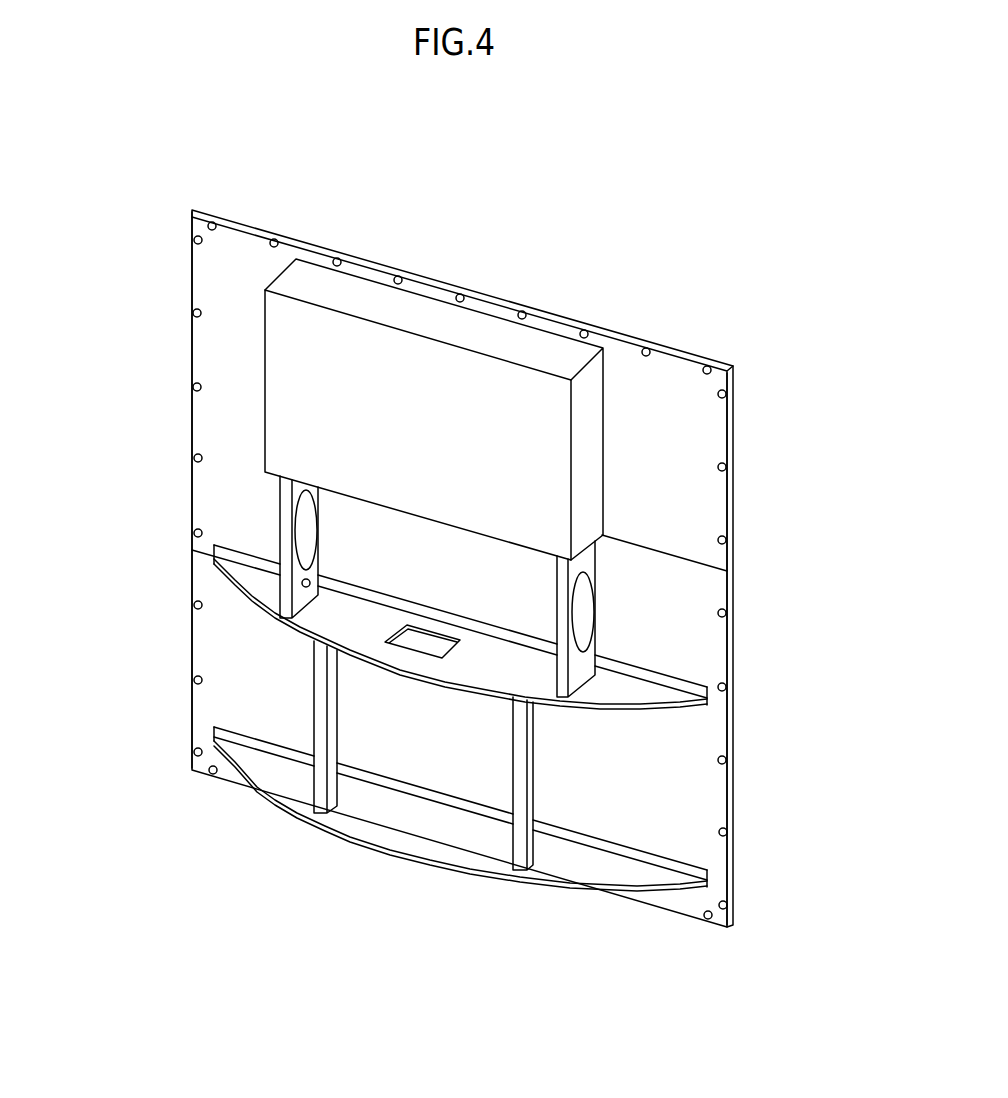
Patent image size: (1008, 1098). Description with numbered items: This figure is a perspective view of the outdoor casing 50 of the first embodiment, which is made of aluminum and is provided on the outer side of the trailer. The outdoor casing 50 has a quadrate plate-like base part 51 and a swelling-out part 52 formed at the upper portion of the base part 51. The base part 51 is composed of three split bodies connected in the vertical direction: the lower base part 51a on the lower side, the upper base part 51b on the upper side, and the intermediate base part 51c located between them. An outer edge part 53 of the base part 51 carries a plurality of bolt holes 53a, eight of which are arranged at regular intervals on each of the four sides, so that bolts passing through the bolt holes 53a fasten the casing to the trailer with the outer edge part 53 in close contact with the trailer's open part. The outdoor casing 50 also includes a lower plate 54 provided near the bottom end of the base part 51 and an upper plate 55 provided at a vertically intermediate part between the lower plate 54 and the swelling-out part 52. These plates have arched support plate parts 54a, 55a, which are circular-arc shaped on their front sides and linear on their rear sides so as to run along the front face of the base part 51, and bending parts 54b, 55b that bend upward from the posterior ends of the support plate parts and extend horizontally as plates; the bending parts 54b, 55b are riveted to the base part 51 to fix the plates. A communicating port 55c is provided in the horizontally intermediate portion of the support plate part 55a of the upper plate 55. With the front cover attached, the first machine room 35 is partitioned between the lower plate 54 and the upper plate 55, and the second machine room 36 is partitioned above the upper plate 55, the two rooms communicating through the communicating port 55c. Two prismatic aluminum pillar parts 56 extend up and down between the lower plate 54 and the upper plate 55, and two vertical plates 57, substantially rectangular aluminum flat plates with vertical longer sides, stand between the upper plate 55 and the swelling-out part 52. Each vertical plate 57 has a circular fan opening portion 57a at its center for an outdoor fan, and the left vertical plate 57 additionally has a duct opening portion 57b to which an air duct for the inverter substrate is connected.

The outdoor casing 50 is at (683, 220).
The base part 51 is at (190, 276).
The lower base part 51a is at (205, 645).
The upper base part 51b is at (205, 347).
The intermediate base part 51c is at (205, 521).
The swelling-out part 52 is at (413, 372).
The outer edge part 53 is at (205, 487).
The bolt hole 53a is at (196, 390).
The lower plate 54 is at (484, 875).
The support plate part of lower plate 54a is at (557, 870).
The bending part of lower plate 54b is at (466, 810).
The upper plate 55 is at (623, 709).
The support plate part of upper plate 55a is at (623, 692).
The bending part of upper plate 55b is at (483, 630).
The communicating port 55c is at (425, 640).
The pillar part 56 is at (317, 682).
The vertical plate 57 is at (280, 514).
The fan opening portion 57a is at (308, 518).
The duct opening portion 57b is at (305, 585).
The first machine room 35 is at (380, 724).
The second machine room 36 is at (523, 608).